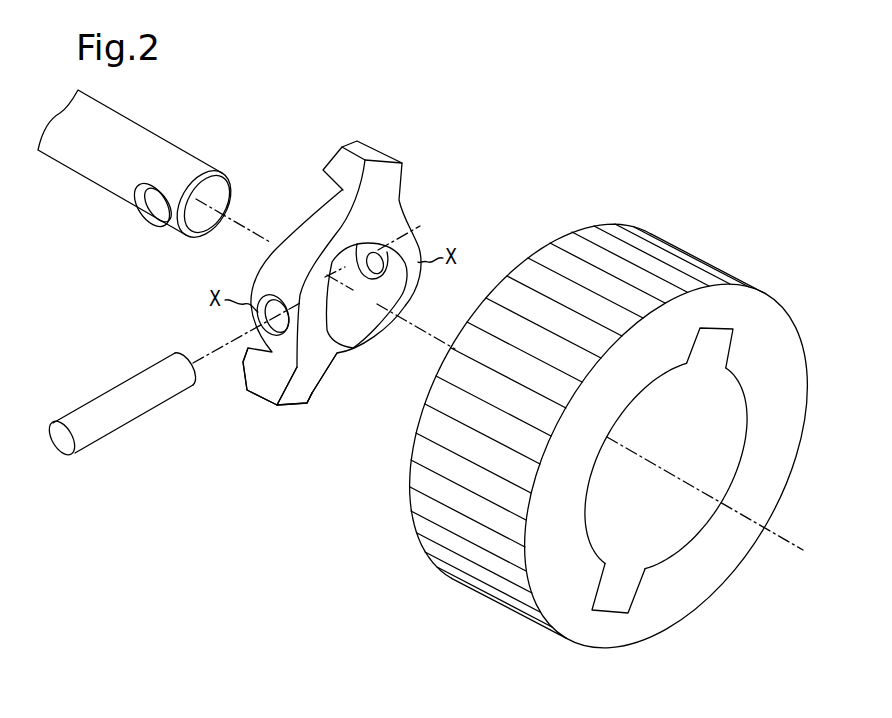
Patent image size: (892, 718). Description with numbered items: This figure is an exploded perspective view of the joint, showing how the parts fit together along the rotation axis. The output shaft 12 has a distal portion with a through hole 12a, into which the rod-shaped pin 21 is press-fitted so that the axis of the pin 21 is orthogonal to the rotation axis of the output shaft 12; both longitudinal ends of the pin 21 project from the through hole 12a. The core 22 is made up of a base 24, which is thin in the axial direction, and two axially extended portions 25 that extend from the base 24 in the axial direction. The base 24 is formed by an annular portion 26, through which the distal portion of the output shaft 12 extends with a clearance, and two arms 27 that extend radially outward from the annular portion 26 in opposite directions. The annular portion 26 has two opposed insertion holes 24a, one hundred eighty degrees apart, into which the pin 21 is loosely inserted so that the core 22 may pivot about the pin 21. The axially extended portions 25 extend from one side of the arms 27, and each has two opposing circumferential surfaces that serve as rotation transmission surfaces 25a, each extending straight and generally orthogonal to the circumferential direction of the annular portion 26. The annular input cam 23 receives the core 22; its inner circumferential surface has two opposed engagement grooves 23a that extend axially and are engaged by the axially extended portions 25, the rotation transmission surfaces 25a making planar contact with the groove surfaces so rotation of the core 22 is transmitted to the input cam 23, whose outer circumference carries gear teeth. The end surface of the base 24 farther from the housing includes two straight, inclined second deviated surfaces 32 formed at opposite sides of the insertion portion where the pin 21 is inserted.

The output shaft 12 is at (150, 142).
The through hole 12a is at (152, 215).
The pin 21 is at (128, 385).
The core 22 is at (262, 268).
The input cam 23 is at (681, 244).
The engagement grooves 23a is at (716, 348).
The base 24 is at (303, 236).
The insertion holes 24a is at (400, 278).
The axially extended portions 25 is at (351, 146).
The rotation transmission surfaces 25a is at (338, 166).
The annular portion 26 is at (400, 300).
The arms 27 is at (383, 195).
The second deviated surfaces 32 is at (378, 235).